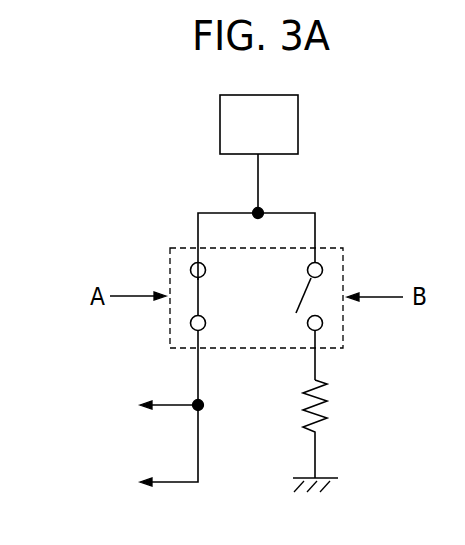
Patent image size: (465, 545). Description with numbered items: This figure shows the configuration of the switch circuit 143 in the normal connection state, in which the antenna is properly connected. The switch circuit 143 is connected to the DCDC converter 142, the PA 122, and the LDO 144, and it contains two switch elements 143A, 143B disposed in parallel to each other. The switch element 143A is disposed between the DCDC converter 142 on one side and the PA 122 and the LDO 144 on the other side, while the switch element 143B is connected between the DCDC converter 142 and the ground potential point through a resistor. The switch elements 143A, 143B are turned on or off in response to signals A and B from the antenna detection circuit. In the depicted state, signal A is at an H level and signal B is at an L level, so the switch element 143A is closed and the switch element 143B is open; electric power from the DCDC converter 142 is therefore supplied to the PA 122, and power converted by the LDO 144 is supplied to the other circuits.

The DCDC converter 142 is at (298, 125).
The switch circuit 143 is at (73, 178).
The switch element 143A is at (188, 287).
The switch element 143B is at (300, 287).
The PA 122 is at (100, 400).
The LDO 144 is at (90, 478).